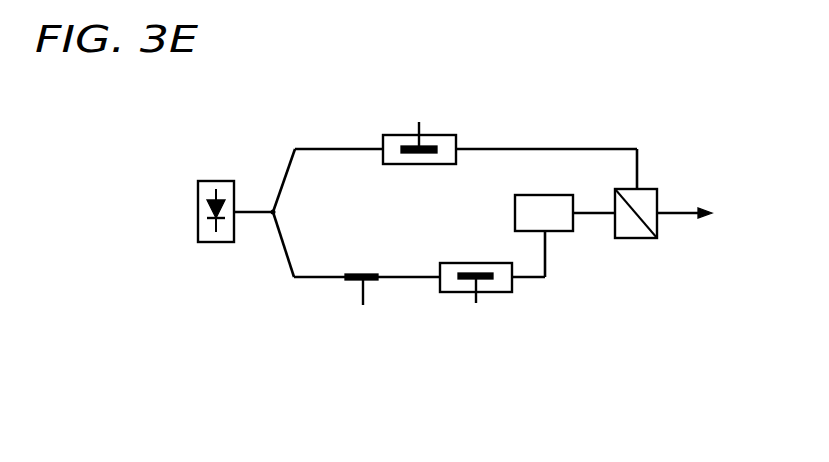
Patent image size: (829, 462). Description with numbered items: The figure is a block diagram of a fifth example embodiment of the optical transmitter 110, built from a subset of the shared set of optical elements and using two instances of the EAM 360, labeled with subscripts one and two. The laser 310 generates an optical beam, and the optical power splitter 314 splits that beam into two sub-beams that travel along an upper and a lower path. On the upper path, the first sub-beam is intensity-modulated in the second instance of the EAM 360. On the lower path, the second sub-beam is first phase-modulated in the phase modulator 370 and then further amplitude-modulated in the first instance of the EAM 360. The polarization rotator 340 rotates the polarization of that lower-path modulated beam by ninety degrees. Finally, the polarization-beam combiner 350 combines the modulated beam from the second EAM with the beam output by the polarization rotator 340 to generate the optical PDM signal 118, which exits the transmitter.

The optical transmitter 110 is at (131, 86).
The laser 310 is at (198, 212).
The optical power splitter 314 is at (264, 196).
The polarization rotator 340 is at (515, 212).
The polarization-beam combiner 350 is at (657, 189).
The EAM 360 is at (445, 135).
The phase modulator 370 is at (310, 386).
The optical PDM signal 118 is at (683, 215).